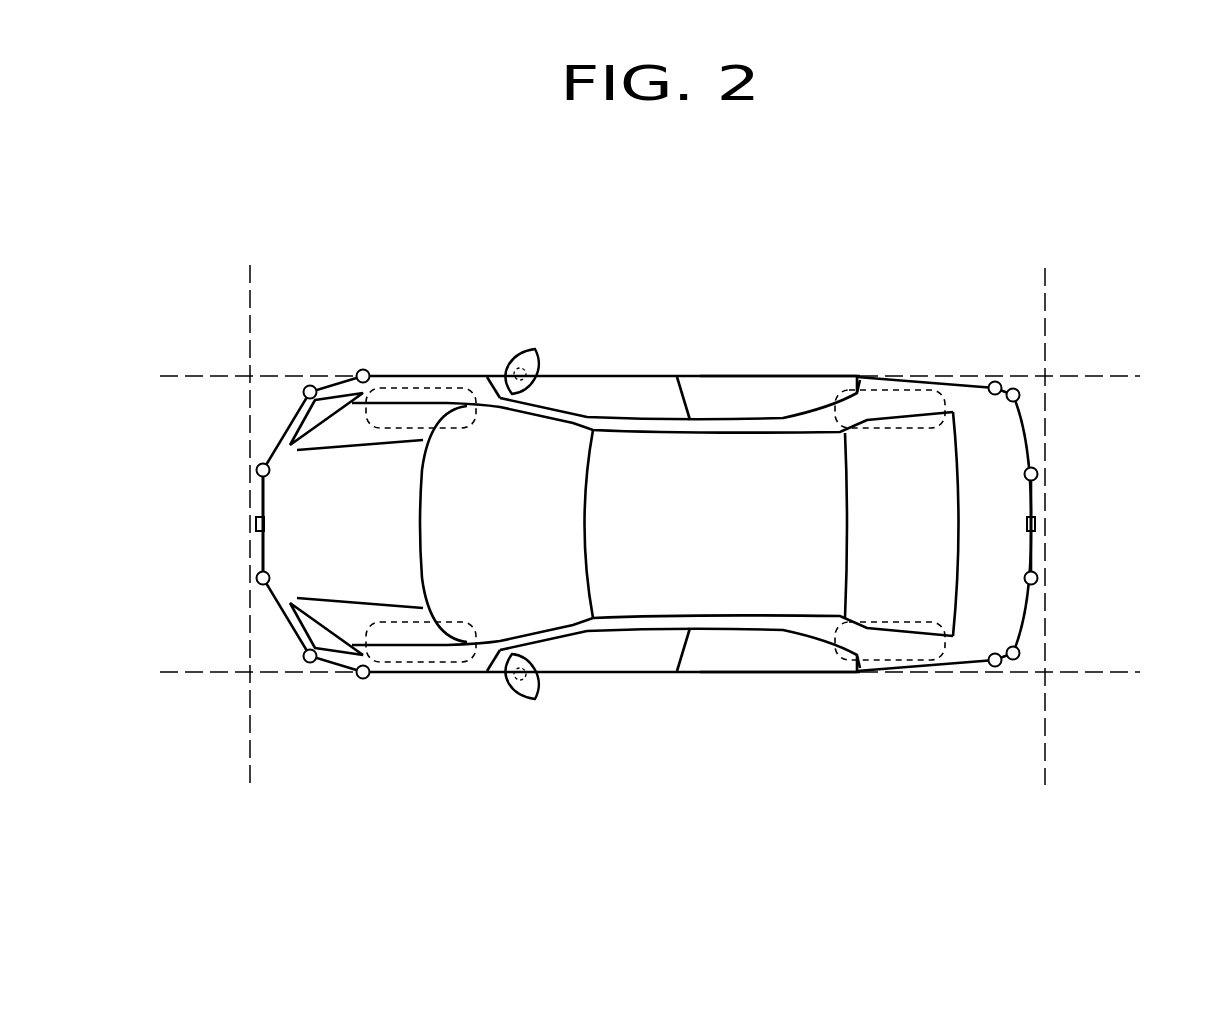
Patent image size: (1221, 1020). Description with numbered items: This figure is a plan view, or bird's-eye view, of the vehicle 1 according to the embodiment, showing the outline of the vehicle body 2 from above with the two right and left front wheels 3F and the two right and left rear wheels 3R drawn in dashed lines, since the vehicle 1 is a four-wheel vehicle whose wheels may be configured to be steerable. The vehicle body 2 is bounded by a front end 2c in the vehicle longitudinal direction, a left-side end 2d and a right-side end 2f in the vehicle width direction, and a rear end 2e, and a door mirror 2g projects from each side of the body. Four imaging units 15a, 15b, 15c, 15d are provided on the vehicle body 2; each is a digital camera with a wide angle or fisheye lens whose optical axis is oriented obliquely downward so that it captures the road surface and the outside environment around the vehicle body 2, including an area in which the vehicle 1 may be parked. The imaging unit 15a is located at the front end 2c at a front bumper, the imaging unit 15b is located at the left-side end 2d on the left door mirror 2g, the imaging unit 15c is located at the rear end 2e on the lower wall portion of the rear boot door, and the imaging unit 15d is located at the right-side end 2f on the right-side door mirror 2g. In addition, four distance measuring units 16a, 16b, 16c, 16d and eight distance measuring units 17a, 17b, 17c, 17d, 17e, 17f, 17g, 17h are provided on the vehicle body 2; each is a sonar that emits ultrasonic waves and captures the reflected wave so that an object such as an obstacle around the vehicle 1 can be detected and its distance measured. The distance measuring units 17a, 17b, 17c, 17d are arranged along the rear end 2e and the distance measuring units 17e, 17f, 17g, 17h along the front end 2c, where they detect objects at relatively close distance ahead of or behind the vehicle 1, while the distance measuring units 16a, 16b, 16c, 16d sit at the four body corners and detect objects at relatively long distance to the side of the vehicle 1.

The vehicle 1 is at (777, 284).
The vehicle body 2 is at (963, 384).
The front end 2c is at (258, 547).
The left-side end 2d is at (760, 673).
The rear end 2e is at (1036, 555).
The right-side end 2f is at (779, 375).
The door mirror 2g is at (540, 351).
The front wheels 3F is at (418, 387).
The rear wheels 3R is at (885, 389).
The imaging unit 15a is at (255, 524).
The imaging unit 15b is at (520, 682).
The imaging unit 15c is at (1037, 524).
The imaging unit 15d is at (520, 366).
The distance measuring unit 16a is at (994, 668).
The distance measuring unit 16b is at (994, 380).
The distance measuring unit 16c is at (360, 370).
The distance measuring unit 16d is at (360, 680).
The distance measuring unit 17a is at (1020, 655).
The distance measuring unit 17b is at (1038, 580).
The distance measuring unit 17c is at (1038, 473).
The distance measuring unit 17d is at (1020, 392).
The distance measuring unit 17e is at (303, 393).
The distance measuring unit 17f is at (257, 470).
The distance measuring unit 17g is at (257, 581).
The distance measuring unit 17h is at (303, 656).